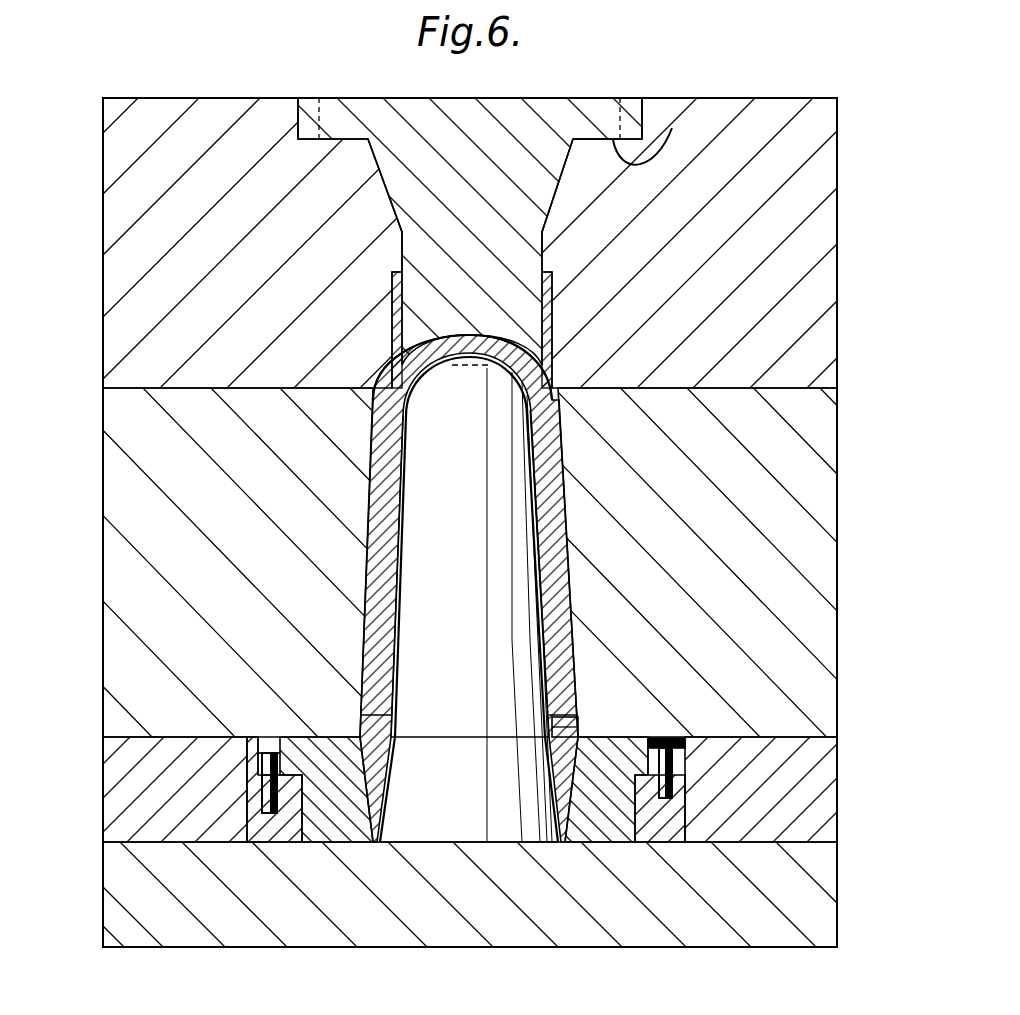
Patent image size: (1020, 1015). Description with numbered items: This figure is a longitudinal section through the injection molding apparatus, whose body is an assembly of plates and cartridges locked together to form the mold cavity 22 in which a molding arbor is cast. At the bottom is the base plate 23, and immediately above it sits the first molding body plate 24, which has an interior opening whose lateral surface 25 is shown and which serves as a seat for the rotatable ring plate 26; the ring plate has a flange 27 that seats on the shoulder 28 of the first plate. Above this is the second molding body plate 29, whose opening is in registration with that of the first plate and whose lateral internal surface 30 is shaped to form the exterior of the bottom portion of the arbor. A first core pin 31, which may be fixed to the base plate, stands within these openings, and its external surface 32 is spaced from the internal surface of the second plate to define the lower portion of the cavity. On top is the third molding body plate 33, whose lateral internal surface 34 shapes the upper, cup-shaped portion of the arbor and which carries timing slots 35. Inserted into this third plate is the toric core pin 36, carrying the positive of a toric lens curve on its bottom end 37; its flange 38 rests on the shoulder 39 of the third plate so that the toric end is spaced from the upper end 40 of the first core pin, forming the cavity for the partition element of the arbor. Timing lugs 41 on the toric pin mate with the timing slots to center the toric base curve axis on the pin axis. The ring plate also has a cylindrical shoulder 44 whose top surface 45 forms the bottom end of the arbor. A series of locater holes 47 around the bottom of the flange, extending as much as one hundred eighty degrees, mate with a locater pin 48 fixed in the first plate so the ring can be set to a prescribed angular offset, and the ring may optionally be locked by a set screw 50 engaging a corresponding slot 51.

The mold cavity 22 is at (558, 492).
The base plate 23 is at (792, 895).
The first molding body plate 24 is at (128, 795).
The lateral surface of interior opening 25 is at (276, 814).
The rotatable ring plate 26 is at (350, 790).
The flange 27 is at (258, 750).
The shoulder 28 is at (248, 800).
The second molding body plate 29 is at (158, 592).
The lateral internal surface 30 is at (353, 538).
The first core pin 31 is at (440, 562).
The external surface of core pin 32 is at (546, 452).
The third molding body plate 33 is at (158, 248).
The lateral internal surface 34 is at (392, 333).
The timing slots 35 is at (298, 120).
The toric core pin 36 is at (480, 148).
The bottom end of toric core pin 37 is at (471, 334).
The flange 38 is at (605, 126).
The shoulder 39 is at (700, 126).
The upper end of first core pin 40 is at (468, 366).
The timing lugs 41 is at (313, 113).
The cylindrical shoulder 44 is at (570, 722).
The top surface of cylindrical shoulder 45 is at (566, 722).
The locater holes 47 is at (270, 752).
The locater pin 48 is at (290, 755).
The set screw 50 is at (656, 738).
The slot 51 is at (673, 752).